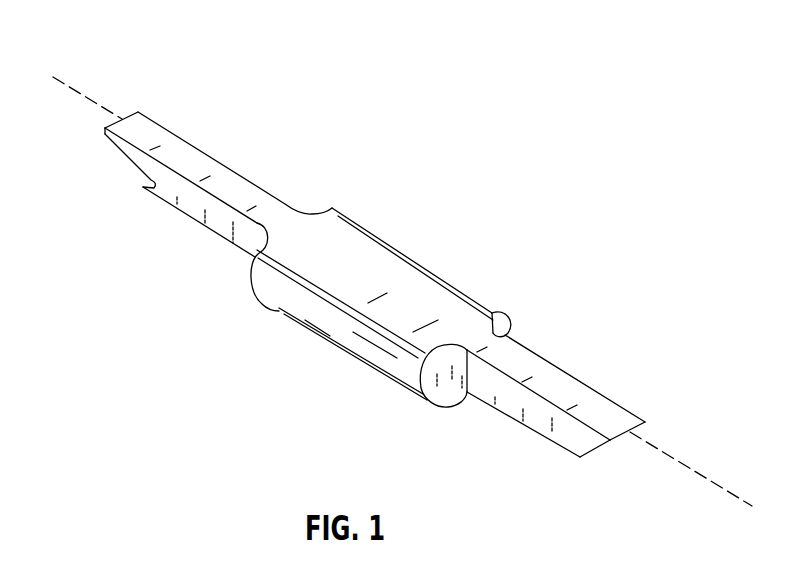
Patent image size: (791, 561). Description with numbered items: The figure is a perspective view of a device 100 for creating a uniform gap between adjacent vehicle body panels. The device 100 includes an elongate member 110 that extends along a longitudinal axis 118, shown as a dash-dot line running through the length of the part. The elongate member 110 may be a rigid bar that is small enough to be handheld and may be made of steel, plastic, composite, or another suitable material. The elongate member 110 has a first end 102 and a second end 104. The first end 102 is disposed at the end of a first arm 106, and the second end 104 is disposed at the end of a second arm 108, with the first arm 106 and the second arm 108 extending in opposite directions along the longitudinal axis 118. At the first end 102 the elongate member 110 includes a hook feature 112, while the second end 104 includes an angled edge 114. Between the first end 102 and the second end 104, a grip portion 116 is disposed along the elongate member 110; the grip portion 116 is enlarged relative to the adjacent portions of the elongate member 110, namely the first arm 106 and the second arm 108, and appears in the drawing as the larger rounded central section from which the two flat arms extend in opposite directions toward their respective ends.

The device 100 is at (625, 153).
The first end 102 is at (141, 118).
The second end 104 is at (624, 420).
The first arm 106 is at (192, 148).
The second arm 108 is at (541, 360).
The elongate member 110 is at (242, 181).
The hook feature 112 is at (130, 160).
The angled edge 114 is at (583, 457).
The grip portion 116 is at (288, 294).
The longitudinal axis 118 is at (76, 89).